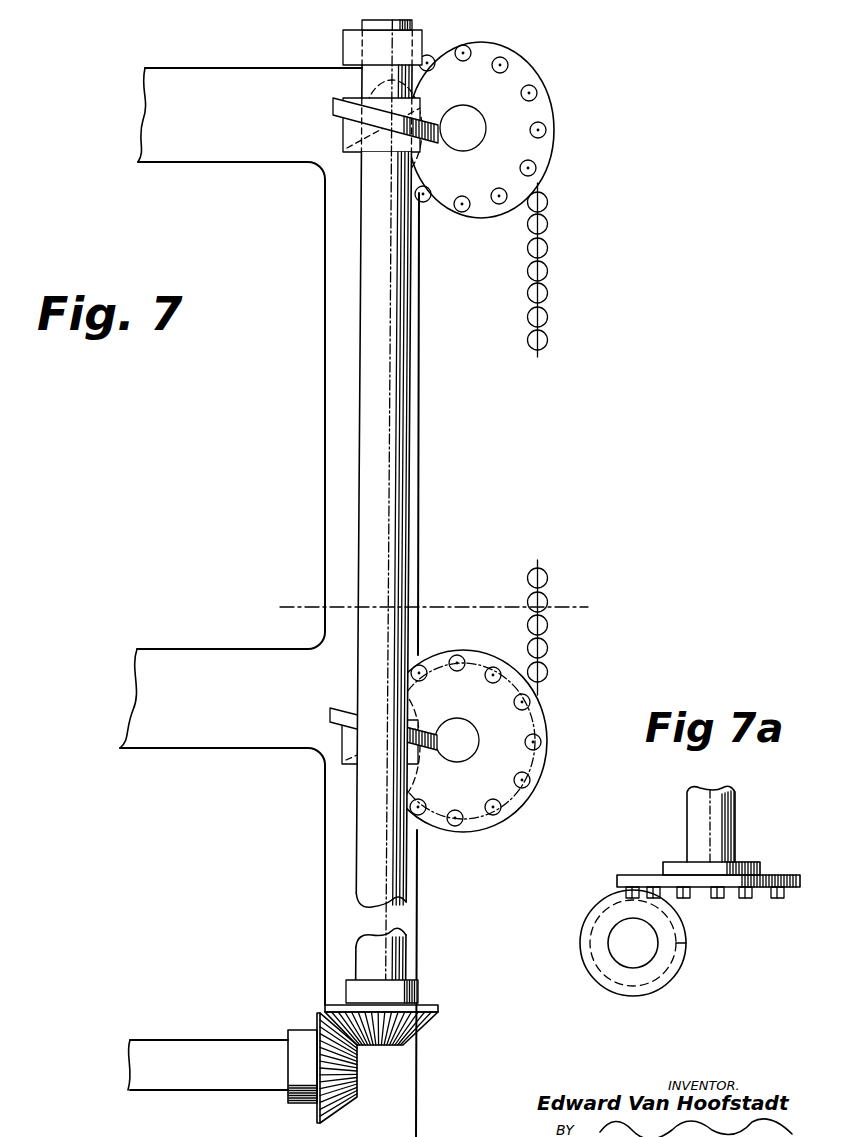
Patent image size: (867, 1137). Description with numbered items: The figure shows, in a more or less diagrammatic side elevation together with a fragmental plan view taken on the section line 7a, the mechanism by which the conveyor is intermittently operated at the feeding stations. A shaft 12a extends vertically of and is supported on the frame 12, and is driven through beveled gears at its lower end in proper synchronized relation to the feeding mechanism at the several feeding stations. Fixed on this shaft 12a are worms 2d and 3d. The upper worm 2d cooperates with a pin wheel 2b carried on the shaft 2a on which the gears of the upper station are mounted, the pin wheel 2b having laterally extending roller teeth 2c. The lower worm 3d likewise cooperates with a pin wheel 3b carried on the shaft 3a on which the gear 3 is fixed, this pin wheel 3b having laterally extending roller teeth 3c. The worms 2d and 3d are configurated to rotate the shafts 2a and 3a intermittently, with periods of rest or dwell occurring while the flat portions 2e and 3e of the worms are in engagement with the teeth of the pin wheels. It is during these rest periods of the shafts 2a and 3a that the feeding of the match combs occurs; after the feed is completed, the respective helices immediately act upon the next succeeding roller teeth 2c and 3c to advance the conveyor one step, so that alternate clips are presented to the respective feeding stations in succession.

In FIG. 7, the shaft 2a is at (473, 110).
In FIG. 7, the pin wheel 2b is at (482, 52).
In FIG. 7, the roller teeth 2c is at (478, 216).
In FIG. 7, the worm 2d is at (345, 123).
In FIG. 7, the flat portion 2e is at (357, 97).
In FIG. 7, the gear 3 is at (546, 712).
In FIG. 7, the shaft 3a is at (473, 740).
In FIG. 7A, the shaft 3a is at (730, 816).
In FIG. 7, the pin wheel 3b is at (535, 773).
In FIG. 7A, the pin wheel 3b is at (770, 876).
In FIG. 7, the roller teeth 3c is at (462, 662).
In FIG. 7A, the roller teeth 3c is at (745, 898).
In FIG. 7, the worm 3d is at (330, 713).
In FIG. 7, the flat portion 3e is at (362, 707).
In FIG. 7A, the flat portion 3e is at (682, 965).
In FIG. 7, the section line 7a is at (432, 606).
In FIG. 7, the frame 12 is at (334, 383).
In FIG. 7, the shaft 12a is at (372, 433).
In FIG. 7A, the shaft 12a is at (622, 954).